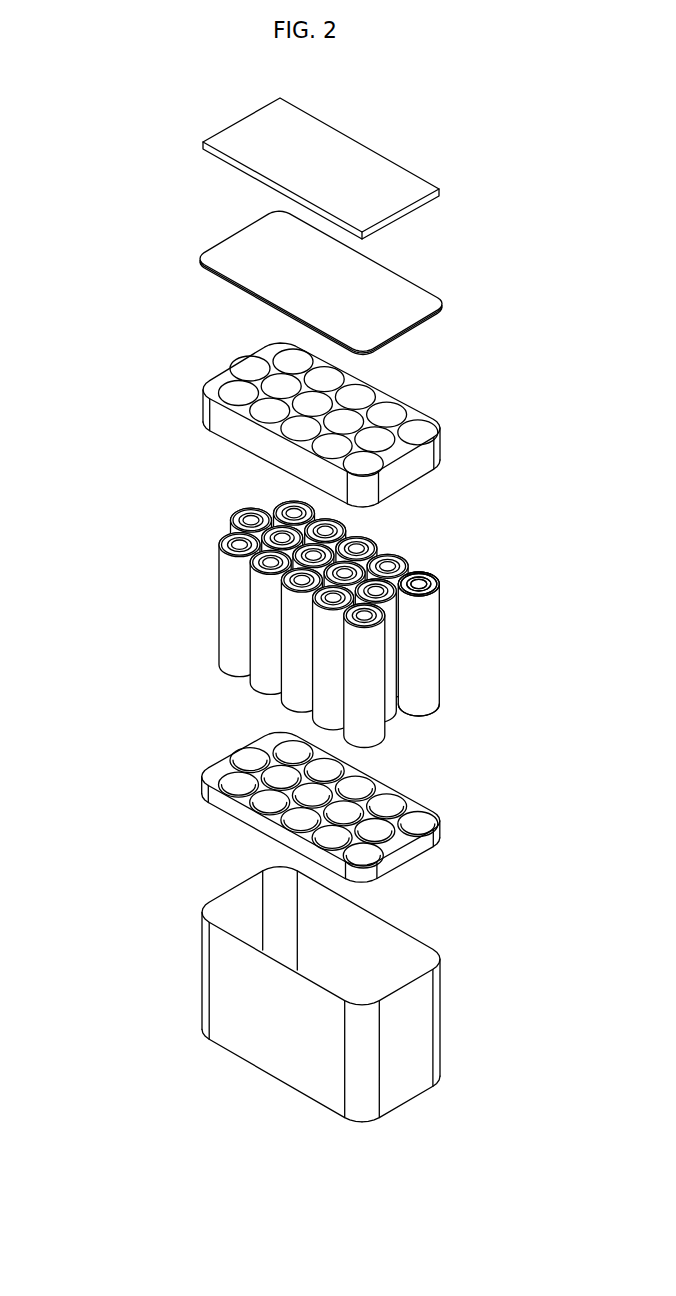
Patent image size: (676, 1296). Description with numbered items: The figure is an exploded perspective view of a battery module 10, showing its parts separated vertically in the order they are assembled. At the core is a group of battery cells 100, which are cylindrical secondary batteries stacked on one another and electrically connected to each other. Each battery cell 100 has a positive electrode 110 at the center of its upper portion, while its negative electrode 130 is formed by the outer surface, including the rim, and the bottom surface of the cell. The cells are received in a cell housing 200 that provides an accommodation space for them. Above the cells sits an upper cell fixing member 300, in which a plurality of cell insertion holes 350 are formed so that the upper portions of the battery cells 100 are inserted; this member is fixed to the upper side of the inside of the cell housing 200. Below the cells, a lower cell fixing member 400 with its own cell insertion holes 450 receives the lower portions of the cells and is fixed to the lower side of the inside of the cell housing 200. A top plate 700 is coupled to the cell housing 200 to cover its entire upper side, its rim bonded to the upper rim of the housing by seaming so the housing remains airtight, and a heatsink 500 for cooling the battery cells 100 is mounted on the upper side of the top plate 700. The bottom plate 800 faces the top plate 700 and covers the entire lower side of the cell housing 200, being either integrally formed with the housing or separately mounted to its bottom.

The battery module 10 is at (114, 140).
The heatsink 500 is at (359, 168).
The top plate 700 is at (361, 282).
The upper cell fixing member 300 is at (365, 425).
The cell insertion holes 350 is at (417, 430).
The battery cell 100 is at (373, 634).
The positive electrode 110 is at (418, 583).
The negative electrode 130 is at (417, 708).
The lower cell fixing member 400 is at (346, 799).
The cell insertion holes 450 is at (238, 784).
The cell housing 200 is at (366, 1004).
The bottom plate 800 is at (287, 1078).